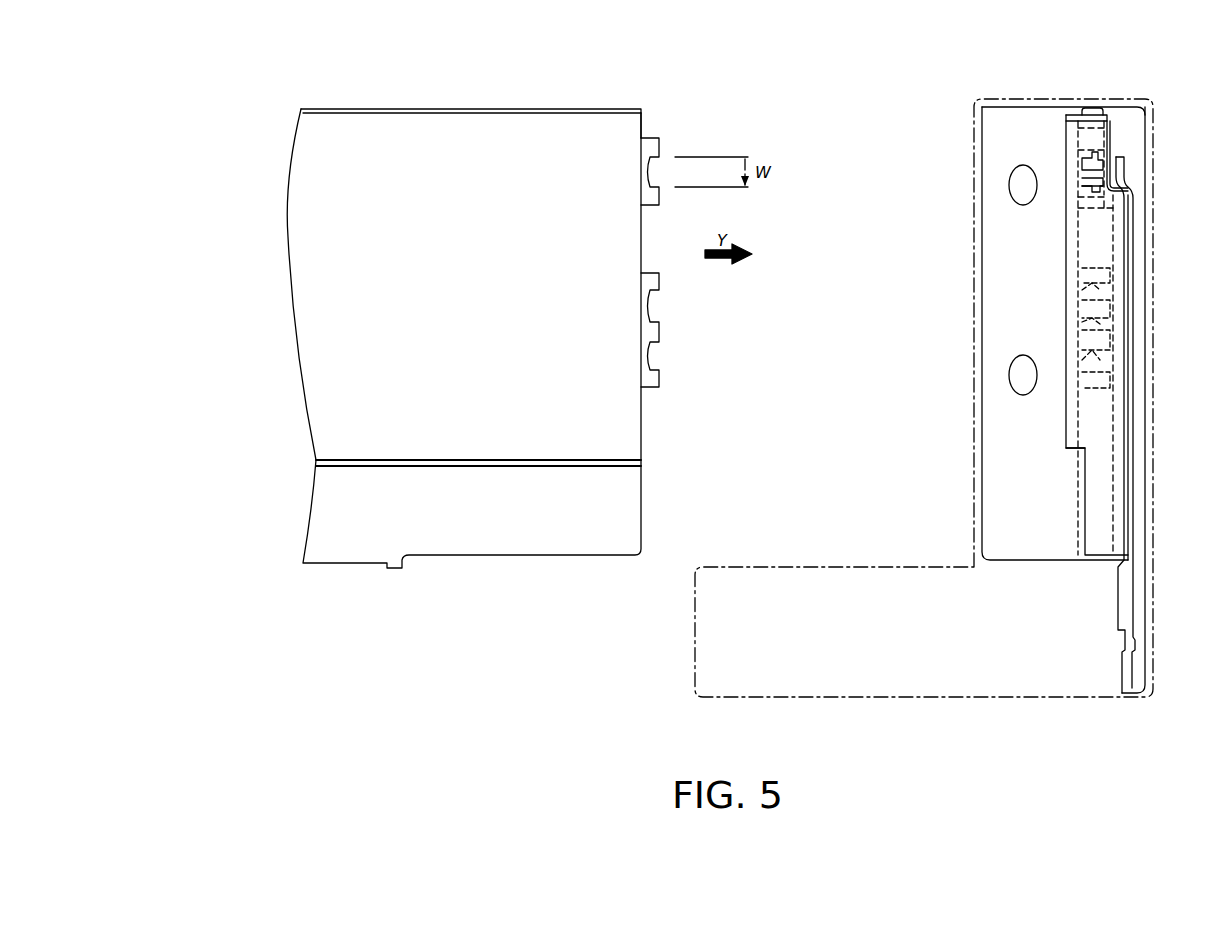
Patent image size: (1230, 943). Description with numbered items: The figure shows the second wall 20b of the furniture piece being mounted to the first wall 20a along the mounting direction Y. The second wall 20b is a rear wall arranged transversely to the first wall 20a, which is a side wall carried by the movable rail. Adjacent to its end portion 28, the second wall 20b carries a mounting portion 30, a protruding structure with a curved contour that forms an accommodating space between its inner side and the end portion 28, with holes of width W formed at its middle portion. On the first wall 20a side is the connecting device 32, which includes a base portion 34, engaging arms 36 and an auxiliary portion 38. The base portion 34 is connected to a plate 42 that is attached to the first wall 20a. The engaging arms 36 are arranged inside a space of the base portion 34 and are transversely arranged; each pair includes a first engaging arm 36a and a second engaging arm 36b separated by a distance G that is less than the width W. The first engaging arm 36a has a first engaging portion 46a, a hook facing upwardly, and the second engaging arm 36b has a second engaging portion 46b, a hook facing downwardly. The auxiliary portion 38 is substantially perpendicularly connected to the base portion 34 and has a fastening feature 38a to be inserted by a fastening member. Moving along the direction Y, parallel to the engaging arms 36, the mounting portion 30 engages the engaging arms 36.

The first wall 20a is at (1136, 331).
The second wall 20b is at (443, 98).
The end portion 28 is at (646, 108).
The mounting portion 30 is at (665, 158).
The connecting device 32 is at (1066, 452).
The base portion 34 is at (1130, 258).
The engaging arm 36 is at (1112, 158).
The first engaging arm 36a is at (1102, 125).
The second engaging arm 36b is at (1110, 182).
The auxiliary portion 38 is at (990, 110).
The fastening feature 38a is at (1018, 190).
The plate 42 is at (1130, 417).
The first engaging portion 46a is at (1080, 158).
The second engaging portion 46b is at (1082, 186).